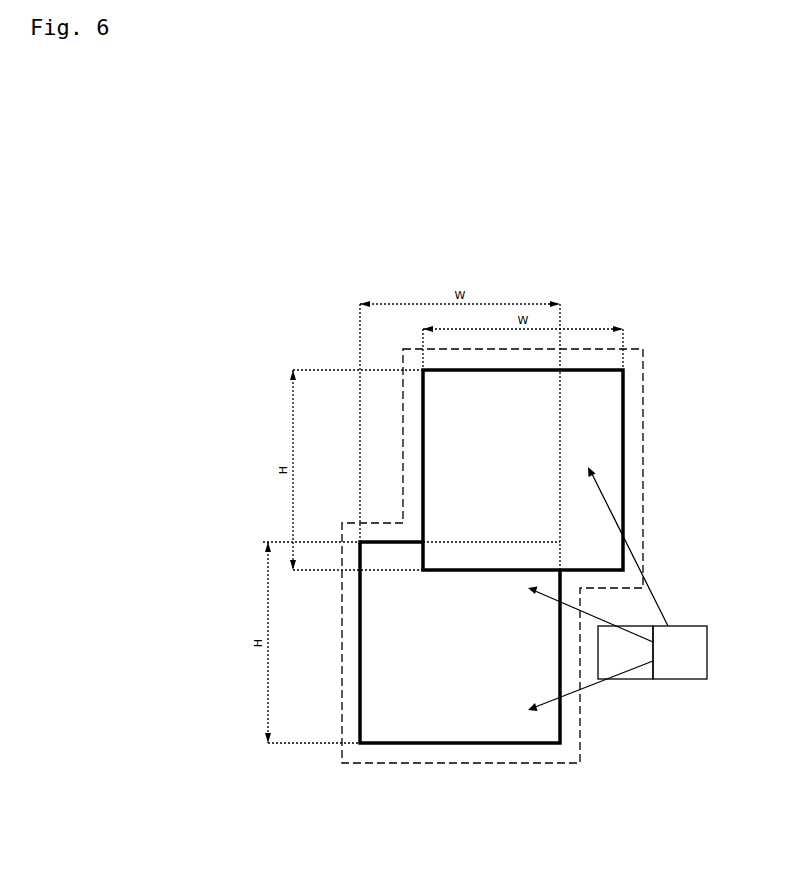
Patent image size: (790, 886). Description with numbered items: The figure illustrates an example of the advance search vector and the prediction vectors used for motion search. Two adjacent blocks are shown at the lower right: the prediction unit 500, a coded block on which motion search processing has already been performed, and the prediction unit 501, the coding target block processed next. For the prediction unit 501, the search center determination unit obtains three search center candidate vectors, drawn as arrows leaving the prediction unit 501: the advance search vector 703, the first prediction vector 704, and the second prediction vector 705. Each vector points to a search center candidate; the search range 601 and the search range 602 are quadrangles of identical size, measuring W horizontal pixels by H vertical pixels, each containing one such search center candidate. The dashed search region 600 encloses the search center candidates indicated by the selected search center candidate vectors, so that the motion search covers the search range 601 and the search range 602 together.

The search region 600 is at (643, 469).
The search range 601 is at (440, 470).
The search range 602 is at (370, 715).
The prediction unit 500 is at (628, 680).
The prediction unit 501 is at (681, 680).
The advance search vector 703 is at (655, 603).
The prediction vector 704 is at (549, 597).
The prediction vector 705 is at (550, 700).